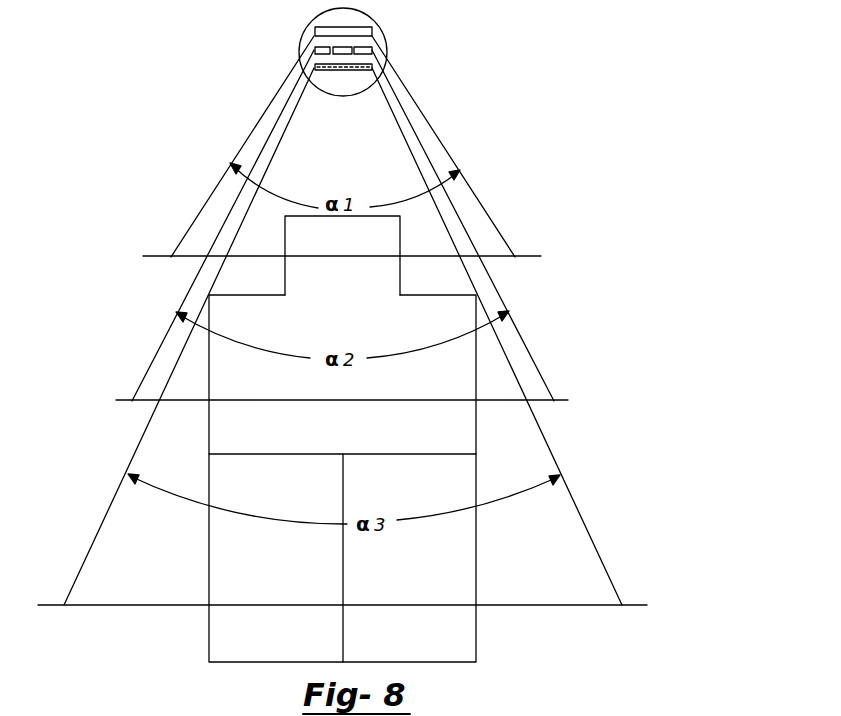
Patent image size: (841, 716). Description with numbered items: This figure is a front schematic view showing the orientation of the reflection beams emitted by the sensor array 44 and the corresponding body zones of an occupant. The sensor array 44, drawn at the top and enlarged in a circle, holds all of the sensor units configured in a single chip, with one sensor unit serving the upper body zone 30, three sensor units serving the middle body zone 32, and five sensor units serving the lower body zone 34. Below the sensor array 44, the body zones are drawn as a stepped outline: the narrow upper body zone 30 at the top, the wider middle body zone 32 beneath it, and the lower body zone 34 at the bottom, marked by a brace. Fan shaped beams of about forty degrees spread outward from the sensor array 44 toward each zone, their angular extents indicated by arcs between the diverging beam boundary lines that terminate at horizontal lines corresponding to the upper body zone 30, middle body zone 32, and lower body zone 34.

The upper body zone 30 is at (296, 233).
The middle body zone 32 is at (223, 372).
The lower body zone 34 is at (369, 556).
The sensor array 44 is at (383, 32).